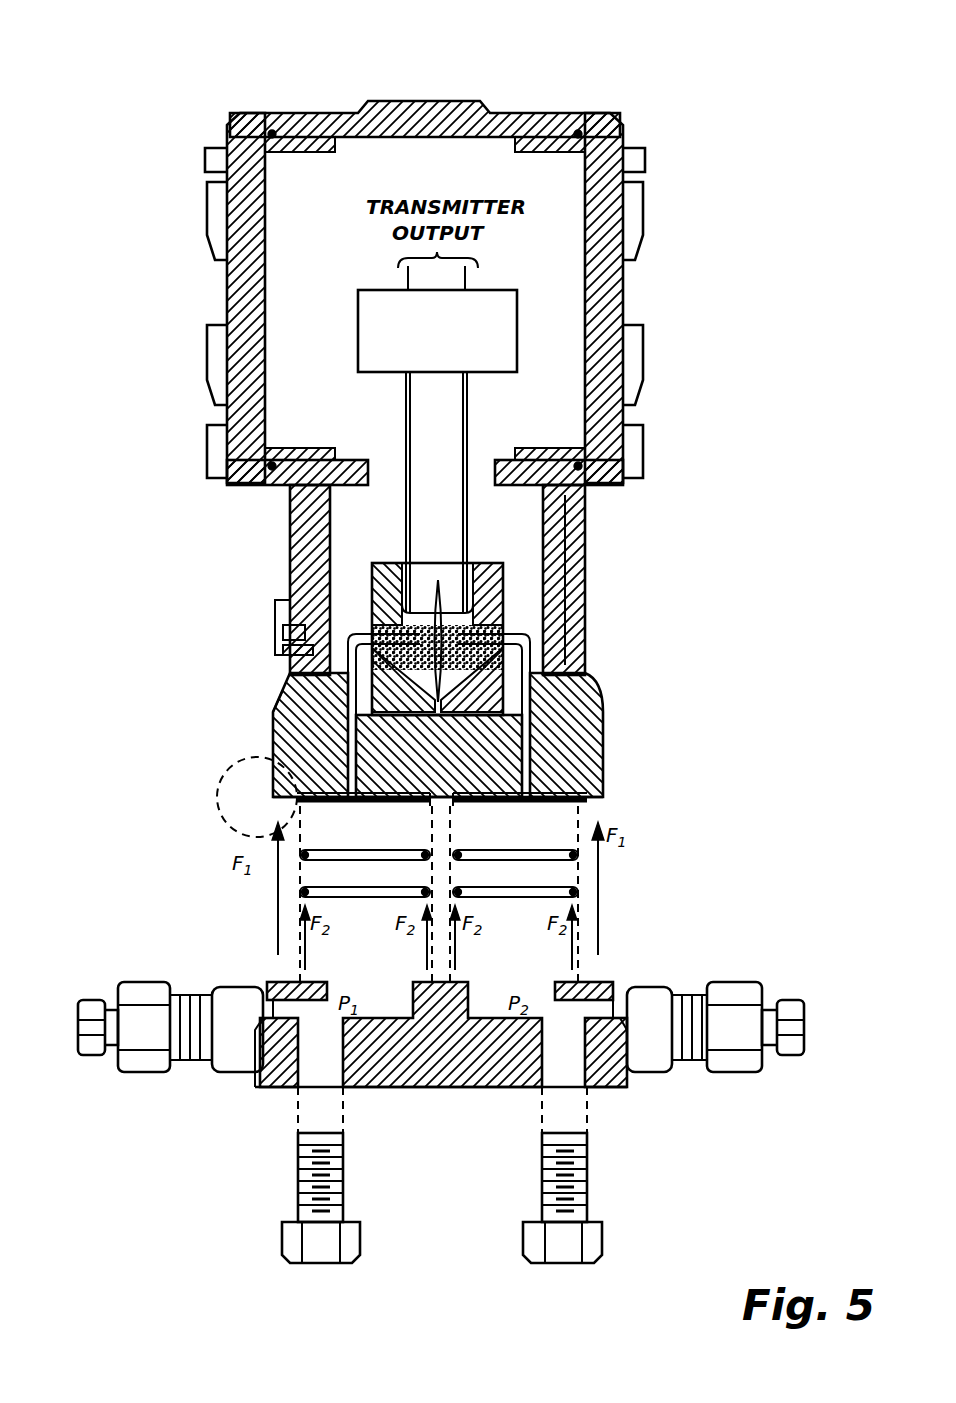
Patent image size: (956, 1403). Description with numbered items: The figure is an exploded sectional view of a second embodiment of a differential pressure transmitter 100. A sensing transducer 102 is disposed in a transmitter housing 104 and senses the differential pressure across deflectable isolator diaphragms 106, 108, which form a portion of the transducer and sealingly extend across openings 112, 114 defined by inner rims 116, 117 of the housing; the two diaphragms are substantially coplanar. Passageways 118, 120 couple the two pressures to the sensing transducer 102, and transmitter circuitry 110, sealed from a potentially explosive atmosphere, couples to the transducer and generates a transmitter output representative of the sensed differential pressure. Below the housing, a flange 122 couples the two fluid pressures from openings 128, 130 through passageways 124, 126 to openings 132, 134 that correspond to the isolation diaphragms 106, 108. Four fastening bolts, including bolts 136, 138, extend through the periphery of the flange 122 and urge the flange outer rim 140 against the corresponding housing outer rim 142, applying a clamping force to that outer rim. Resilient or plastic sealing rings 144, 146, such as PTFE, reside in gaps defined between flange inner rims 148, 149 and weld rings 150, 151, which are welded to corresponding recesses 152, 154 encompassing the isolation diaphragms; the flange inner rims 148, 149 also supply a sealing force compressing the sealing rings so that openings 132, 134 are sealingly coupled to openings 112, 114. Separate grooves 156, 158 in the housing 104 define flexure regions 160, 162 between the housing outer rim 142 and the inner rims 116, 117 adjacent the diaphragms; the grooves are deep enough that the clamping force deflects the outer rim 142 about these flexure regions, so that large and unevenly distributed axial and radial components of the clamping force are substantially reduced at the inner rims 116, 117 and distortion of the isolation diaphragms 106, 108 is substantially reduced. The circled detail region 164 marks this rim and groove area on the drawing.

The differential pressure transmitter 100 is at (399, 80).
The sensing transducer 102 is at (342, 572).
The transmitter housing 104 is at (566, 673).
The isolator diaphragm 106 is at (300, 812).
The isolator diaphragm 108 is at (600, 810).
The transmitter circuitry 110 is at (358, 303).
The opening 112 is at (320, 806).
The opening 114 is at (515, 806).
The inner rim 116 is at (295, 808).
The inner rim 117 is at (590, 812).
The passageway 118 is at (338, 672).
The passageway 120 is at (590, 690).
The flange 122 is at (396, 1087).
The passageway 124 is at (320, 1070).
The passageway 126 is at (548, 1065).
The opening 128 is at (302, 1090).
The opening 130 is at (610, 1090).
The opening 132 is at (395, 1000).
The opening 134 is at (488, 1000).
The fastening bolt 136 is at (282, 1240).
The fastening bolt 138 is at (604, 1240).
The flange outer rim 140 is at (275, 982).
The housing outer rim 142 is at (272, 790).
The sealing ring 144 is at (300, 892).
The sealing ring 146 is at (578, 893).
The flange inner rim 148 is at (310, 985).
The flange inner rim 149 is at (558, 985).
The weld ring 150 is at (300, 856).
The weld ring 151 is at (578, 857).
The recess 152 is at (430, 806).
The recess 154 is at (453, 806).
The groove 156 is at (272, 752).
The groove 158 is at (605, 762).
The flexure region 160 is at (290, 720).
The flexure region 162 is at (603, 728).
The detail region 164 is at (222, 798).